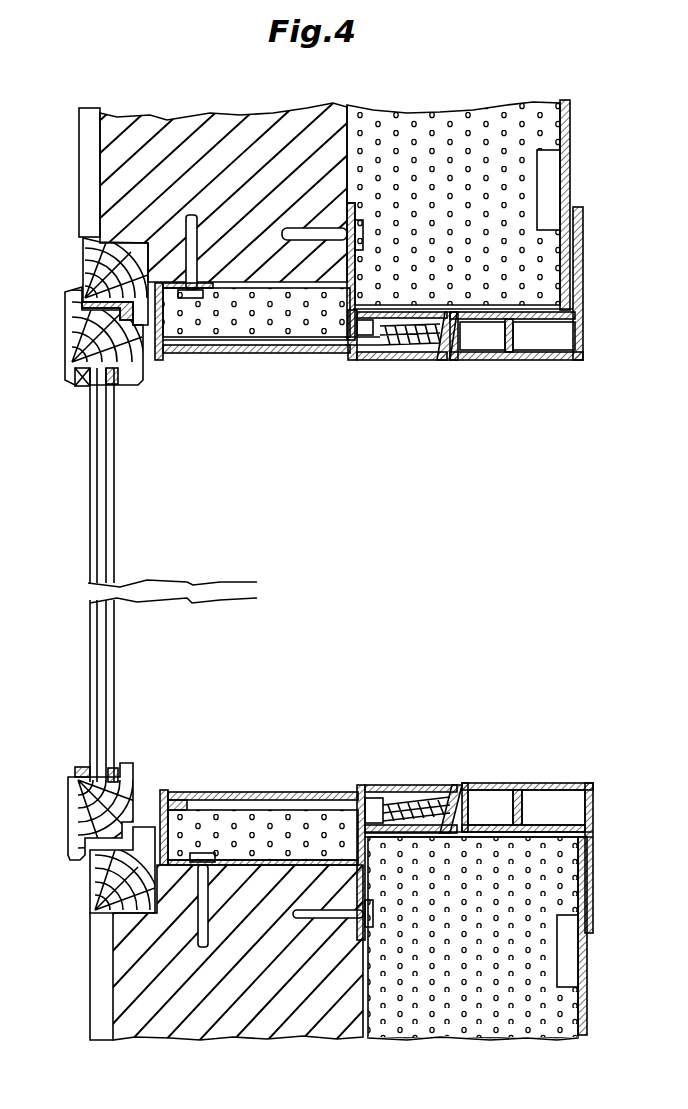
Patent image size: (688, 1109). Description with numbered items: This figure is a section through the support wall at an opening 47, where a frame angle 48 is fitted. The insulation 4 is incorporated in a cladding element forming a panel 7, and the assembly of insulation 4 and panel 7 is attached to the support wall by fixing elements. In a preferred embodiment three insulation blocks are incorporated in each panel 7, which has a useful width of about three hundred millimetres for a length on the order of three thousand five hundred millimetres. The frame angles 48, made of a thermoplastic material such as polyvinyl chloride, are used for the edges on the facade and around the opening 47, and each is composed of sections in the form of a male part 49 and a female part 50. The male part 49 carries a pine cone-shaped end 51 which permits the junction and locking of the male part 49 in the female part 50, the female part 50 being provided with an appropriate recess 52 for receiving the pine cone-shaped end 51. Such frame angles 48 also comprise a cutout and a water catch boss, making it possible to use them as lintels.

The insulation 4 is at (485, 120).
The panel 7 is at (570, 167).
The opening 47 is at (88, 650).
The frame angle 48 is at (545, 372).
The male part 49 is at (557, 783).
The female part 50 is at (393, 785).
The pine cone-shaped end 51 is at (428, 787).
The recess 52 is at (442, 787).